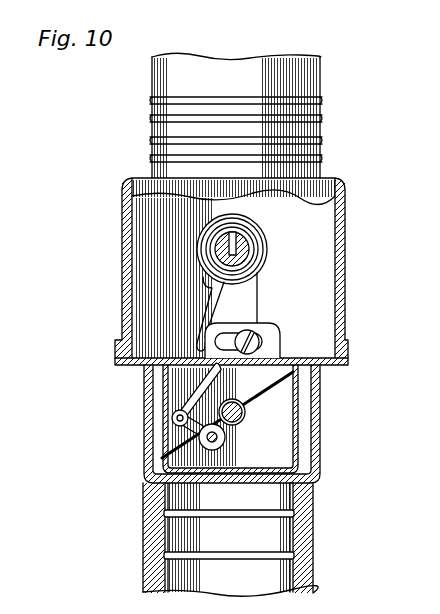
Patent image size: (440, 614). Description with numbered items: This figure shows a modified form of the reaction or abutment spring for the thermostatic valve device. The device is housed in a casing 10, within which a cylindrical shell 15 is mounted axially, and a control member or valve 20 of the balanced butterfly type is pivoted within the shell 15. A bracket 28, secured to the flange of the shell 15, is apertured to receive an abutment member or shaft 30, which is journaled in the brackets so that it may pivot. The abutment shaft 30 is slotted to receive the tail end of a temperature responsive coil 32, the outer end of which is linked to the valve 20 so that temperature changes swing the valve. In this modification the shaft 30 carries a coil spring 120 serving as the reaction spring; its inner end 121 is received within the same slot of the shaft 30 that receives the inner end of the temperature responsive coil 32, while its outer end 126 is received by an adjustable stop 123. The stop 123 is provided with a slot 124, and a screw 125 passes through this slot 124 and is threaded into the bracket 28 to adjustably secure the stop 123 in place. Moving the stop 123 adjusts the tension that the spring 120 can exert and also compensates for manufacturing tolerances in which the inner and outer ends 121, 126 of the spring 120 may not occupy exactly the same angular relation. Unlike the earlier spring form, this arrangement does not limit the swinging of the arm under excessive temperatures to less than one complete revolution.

The casing 10 is at (348, 243).
The cylindrical shell 15 is at (299, 412).
The control member or valve 20 is at (246, 416).
The bracket 28 is at (207, 297).
The abutment member or shaft 30 is at (226, 243).
The temperature responsive coil 32 is at (171, 410).
The coil spring 120 is at (205, 258).
The inner end of coil spring 121 is at (258, 247).
The adjustable stop 123 is at (166, 376).
The slot 124 is at (265, 337).
The screw 125 is at (282, 347).
The outer end of coil spring 126 is at (196, 339).